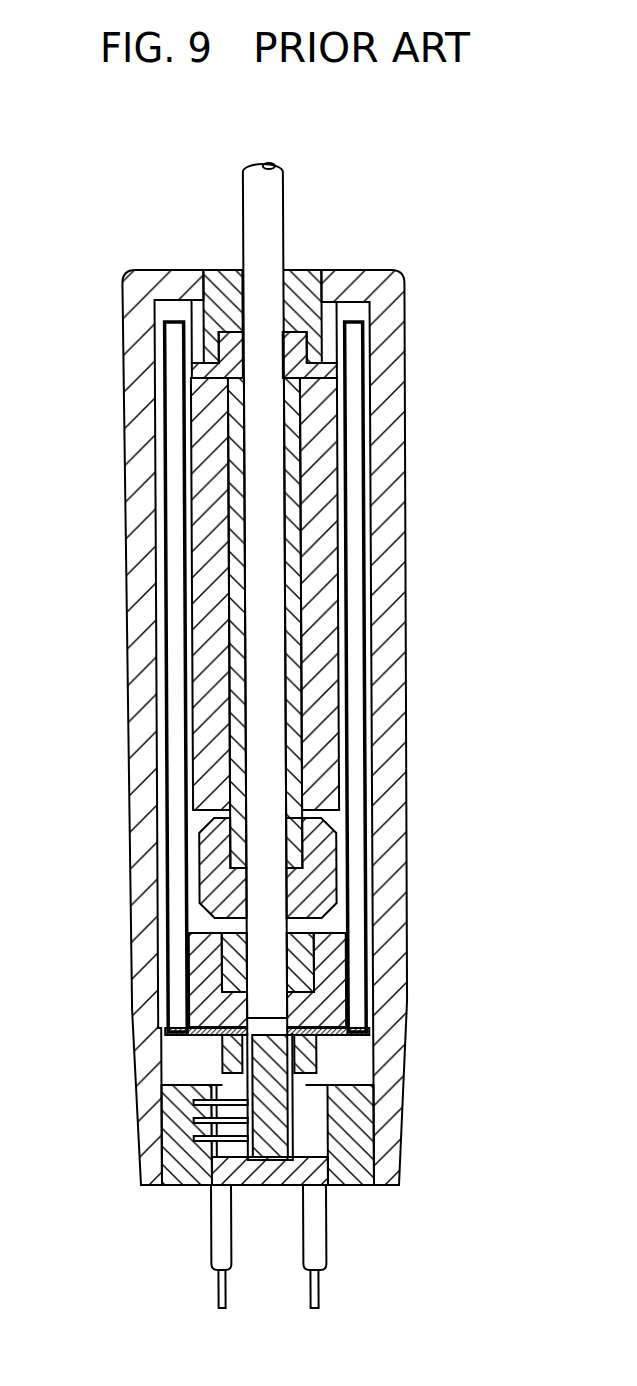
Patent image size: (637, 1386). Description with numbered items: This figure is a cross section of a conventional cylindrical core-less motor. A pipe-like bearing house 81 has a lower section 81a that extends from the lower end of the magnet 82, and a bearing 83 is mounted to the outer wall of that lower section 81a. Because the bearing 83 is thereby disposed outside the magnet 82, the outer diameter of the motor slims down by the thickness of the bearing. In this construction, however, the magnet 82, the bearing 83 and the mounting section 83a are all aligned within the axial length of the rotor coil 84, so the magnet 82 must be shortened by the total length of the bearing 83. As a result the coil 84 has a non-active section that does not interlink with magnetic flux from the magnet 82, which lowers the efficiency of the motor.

The pipe-like bearing house 81 is at (301, 458).
The lower section 81a is at (293, 833).
The magnet 82 is at (324, 675).
The bearing 83 is at (311, 890).
The mounting section 83a is at (224, 840).
The rotor coil 84 is at (171, 453).